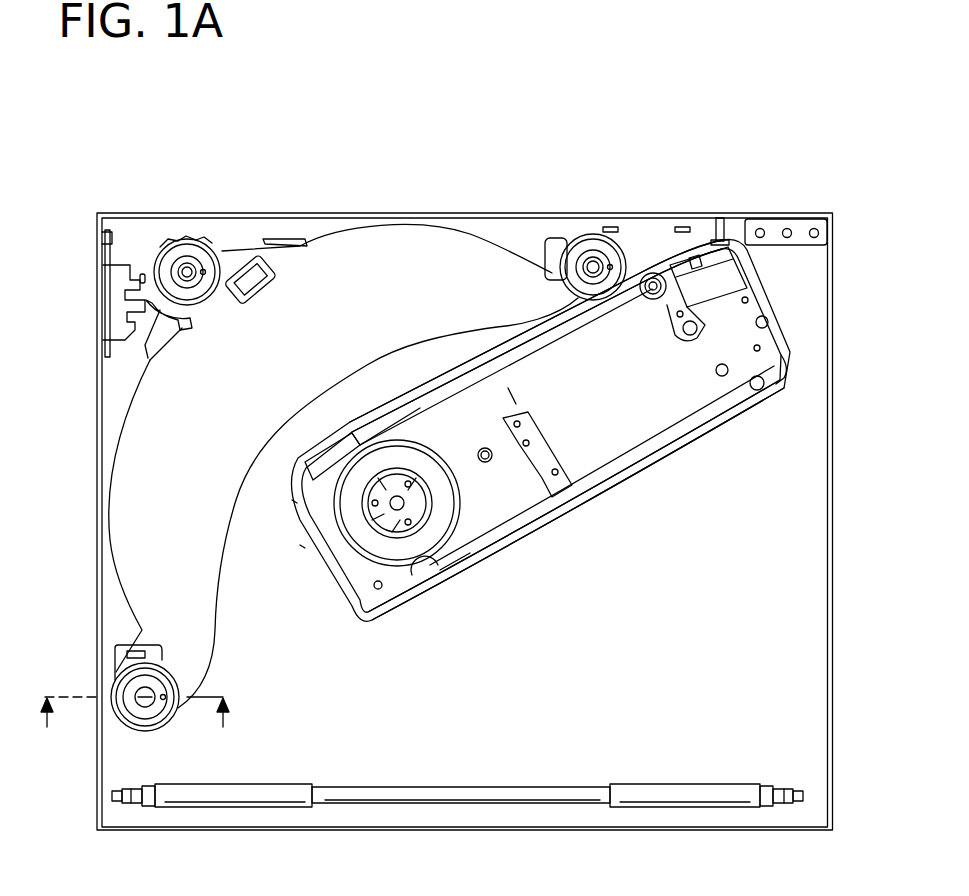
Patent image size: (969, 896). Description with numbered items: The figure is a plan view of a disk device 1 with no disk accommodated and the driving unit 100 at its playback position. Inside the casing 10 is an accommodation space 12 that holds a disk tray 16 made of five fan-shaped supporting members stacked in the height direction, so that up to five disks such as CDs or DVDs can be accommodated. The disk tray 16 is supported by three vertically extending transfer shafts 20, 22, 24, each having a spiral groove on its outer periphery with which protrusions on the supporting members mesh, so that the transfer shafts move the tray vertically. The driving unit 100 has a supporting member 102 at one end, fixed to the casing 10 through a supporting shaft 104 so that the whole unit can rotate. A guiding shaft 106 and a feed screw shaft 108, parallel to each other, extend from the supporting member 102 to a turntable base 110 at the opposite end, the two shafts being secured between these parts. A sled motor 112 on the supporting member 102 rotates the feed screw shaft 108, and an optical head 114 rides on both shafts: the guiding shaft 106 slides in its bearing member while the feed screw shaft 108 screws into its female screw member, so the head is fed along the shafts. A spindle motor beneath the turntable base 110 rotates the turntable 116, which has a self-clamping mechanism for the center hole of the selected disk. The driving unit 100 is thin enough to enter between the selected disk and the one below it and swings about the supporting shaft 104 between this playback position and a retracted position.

The disk device 1 is at (712, 166).
The casing 10 is at (415, 213).
The accommodation space 12 is at (652, 592).
The disk tray 16 is at (332, 257).
The transfer shaft 20 is at (128, 672).
The transfer shaft 22 is at (187, 268).
The transfer shaft 24 is at (593, 262).
The driving unit 100 is at (360, 618).
The supporting member 102 is at (777, 353).
The supporting shaft 104 is at (653, 273).
The guiding shaft 106 is at (677, 442).
The feed screw shaft 108 is at (600, 347).
The turntable base 110 is at (450, 568).
The sled motor 112 is at (727, 270).
The optical head 114 is at (500, 508).
The turntable 116 is at (412, 530).